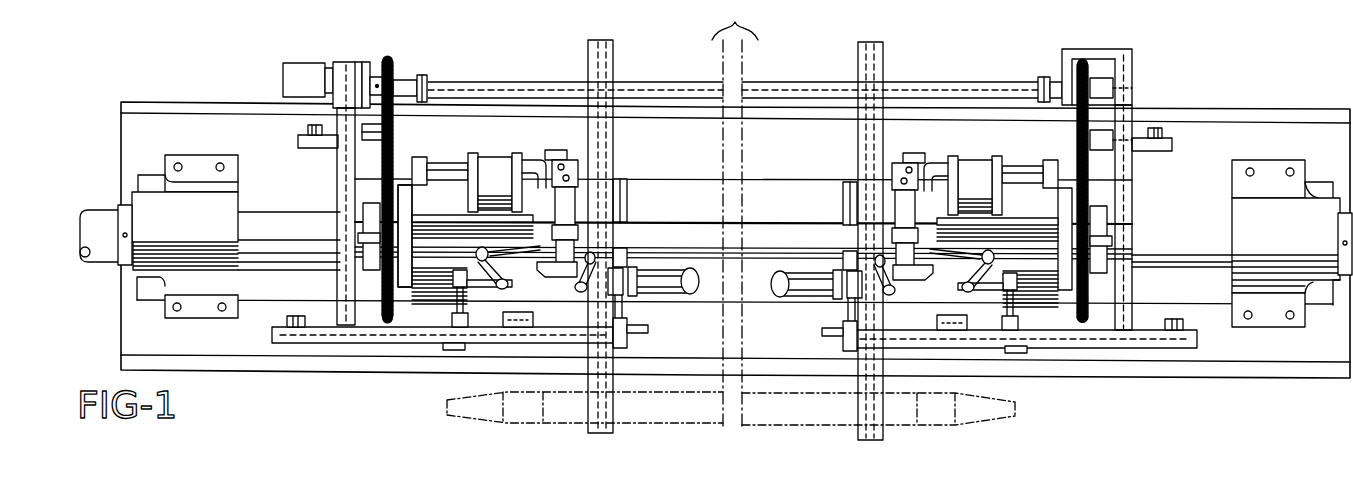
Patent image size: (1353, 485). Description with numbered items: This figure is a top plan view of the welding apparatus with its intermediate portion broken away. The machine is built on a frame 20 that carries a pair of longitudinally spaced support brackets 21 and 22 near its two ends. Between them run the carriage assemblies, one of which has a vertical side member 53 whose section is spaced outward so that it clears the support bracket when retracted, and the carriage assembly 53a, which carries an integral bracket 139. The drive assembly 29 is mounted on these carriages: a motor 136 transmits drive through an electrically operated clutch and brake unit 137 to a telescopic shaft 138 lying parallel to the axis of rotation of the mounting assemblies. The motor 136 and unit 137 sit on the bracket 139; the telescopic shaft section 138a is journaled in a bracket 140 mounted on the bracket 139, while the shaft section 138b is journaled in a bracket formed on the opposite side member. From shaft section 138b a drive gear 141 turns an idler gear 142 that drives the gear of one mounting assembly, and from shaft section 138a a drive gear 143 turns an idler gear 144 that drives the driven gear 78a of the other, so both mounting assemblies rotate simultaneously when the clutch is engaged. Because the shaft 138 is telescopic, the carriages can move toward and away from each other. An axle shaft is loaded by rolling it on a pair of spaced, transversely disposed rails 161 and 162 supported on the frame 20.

The frame 20 is at (1178, 392).
The support bracket 21 is at (197, 233).
The support bracket 22 is at (1302, 240).
The drive assembly 29 is at (353, 51).
The vertical side member 53 is at (1070, 342).
The carriage assembly 53a is at (375, 343).
The driven gear 78a is at (377, 196).
The motor 136 is at (290, 77).
The clutch and brake unit 137 is at (366, 64).
The telescopic shaft 138 is at (690, 80).
The telescopic shaft section 138a is at (534, 81).
The telescopic shaft section 138b is at (974, 83).
The bracket 139 is at (333, 108).
The bracket 140 is at (392, 78).
The drive gear 141 is at (1093, 70).
The idler gear 142 is at (1078, 130).
The drive gear 143 is at (397, 99).
The idler gear 144 is at (385, 138).
The rail 161 is at (603, 148).
The rail 162 is at (883, 138).